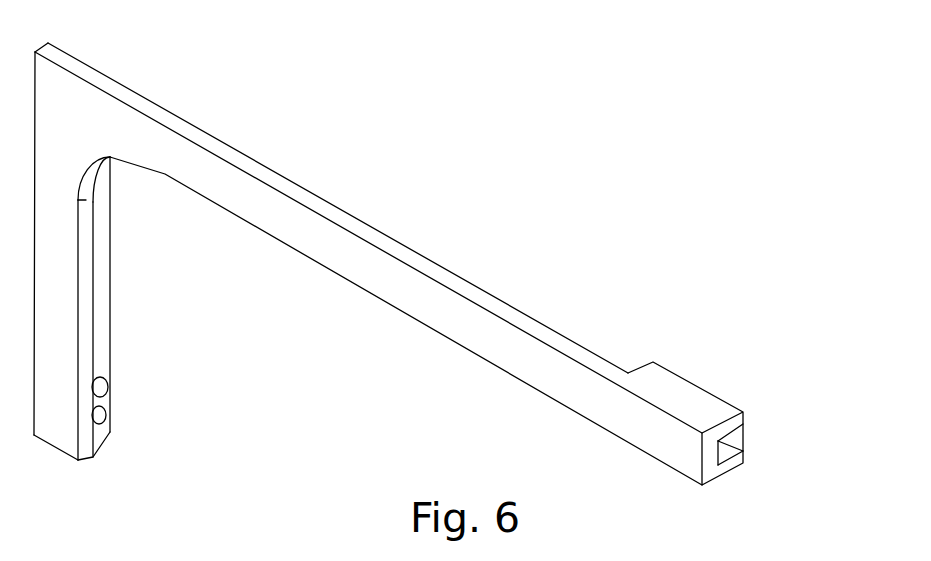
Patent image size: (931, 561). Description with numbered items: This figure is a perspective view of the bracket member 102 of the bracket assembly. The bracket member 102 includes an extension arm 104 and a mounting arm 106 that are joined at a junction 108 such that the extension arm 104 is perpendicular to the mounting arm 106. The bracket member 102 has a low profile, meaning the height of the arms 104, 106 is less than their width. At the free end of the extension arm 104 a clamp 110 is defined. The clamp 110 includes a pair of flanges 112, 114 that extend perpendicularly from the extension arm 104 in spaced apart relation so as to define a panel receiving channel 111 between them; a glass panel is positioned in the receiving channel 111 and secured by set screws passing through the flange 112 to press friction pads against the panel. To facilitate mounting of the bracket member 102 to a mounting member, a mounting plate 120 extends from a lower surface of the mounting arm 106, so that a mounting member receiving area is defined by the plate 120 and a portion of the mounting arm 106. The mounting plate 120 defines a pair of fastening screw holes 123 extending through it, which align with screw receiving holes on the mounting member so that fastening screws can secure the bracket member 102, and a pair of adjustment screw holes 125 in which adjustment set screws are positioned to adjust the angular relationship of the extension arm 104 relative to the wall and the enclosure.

The bracket member 102 is at (422, 271).
The extension arm 104 is at (368, 268).
The mounting arm 106 is at (52, 413).
The junction 108 is at (331, 203).
The clamp 110 is at (704, 384).
The panel receiving channel 111 is at (744, 439).
The flange 112 is at (750, 475).
The flange 114 is at (759, 424).
The mounting plate 120 is at (105, 326).
The fastening screw holes 123 is at (130, 385).
The adjustment screw holes 125 is at (110, 412).